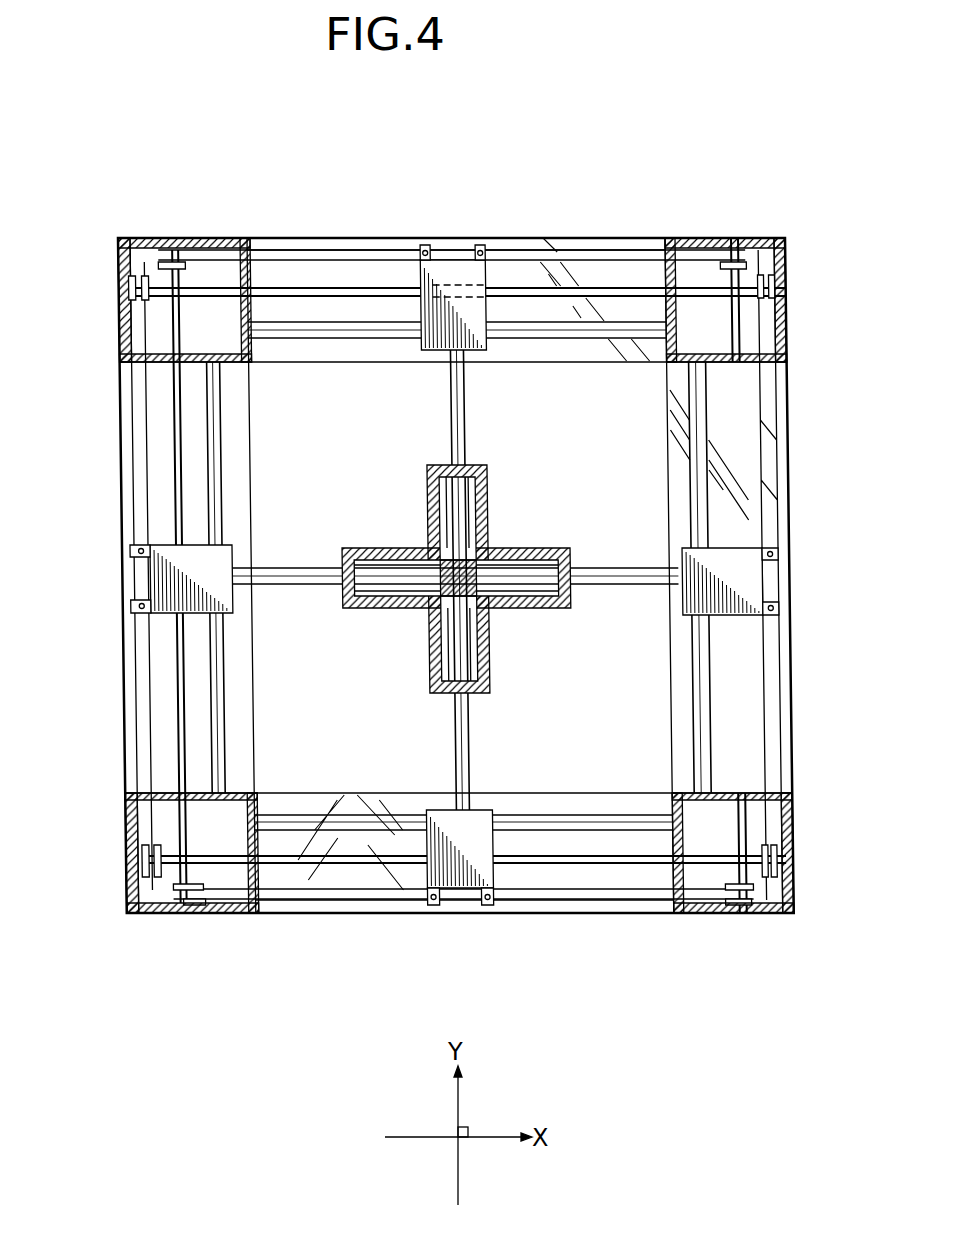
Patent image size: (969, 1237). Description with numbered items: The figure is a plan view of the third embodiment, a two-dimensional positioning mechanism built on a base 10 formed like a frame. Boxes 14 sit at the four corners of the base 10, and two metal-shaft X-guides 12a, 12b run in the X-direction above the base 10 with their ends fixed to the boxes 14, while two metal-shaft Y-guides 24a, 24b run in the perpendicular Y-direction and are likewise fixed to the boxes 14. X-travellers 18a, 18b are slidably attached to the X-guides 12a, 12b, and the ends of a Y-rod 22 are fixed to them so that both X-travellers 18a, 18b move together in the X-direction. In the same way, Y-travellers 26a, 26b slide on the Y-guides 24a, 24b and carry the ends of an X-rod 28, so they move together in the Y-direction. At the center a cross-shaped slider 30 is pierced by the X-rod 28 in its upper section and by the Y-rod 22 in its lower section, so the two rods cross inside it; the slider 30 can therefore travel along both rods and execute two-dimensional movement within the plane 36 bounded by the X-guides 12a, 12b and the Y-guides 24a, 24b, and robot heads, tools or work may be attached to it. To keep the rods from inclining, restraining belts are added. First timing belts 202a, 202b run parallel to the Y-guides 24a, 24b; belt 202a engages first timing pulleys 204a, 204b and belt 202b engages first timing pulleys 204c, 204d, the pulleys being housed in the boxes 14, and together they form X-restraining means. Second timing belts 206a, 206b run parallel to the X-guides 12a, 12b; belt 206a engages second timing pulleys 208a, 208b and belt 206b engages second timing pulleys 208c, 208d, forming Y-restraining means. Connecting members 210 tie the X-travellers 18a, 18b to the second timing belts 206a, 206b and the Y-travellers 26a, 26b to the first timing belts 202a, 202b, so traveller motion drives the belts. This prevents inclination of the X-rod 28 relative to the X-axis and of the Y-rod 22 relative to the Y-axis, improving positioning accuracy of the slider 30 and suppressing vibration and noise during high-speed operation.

The base 10 is at (622, 913).
The boxes 14 is at (155, 238).
The X-guide 12a is at (578, 830).
The X-guide 12b is at (317, 328).
The X-traveller 18a is at (437, 852).
The X-traveller 18b is at (432, 333).
The Y-rod 22 is at (462, 415).
The Y-guide 24a is at (705, 712).
The Y-guide 24b is at (215, 738).
The Y-traveller 26a is at (720, 557).
The Y-traveller 26b is at (190, 580).
The X-rod 28 is at (610, 587).
The slider 30 is at (492, 492).
The plane 36 is at (342, 768).
The first timing belt 202a is at (768, 440).
The first timing belt 202b is at (140, 423).
The first timing pulley 204a is at (792, 828).
The first timing pulley 204b is at (785, 313).
The first timing pulley 204c is at (145, 880).
The first timing pulley 204d is at (142, 238).
The second timing belt 206a is at (662, 913).
The second timing belt 206b is at (582, 257).
The second timing pulley 208a is at (768, 915).
The second timing pulley 208b is at (195, 913).
The second timing pulley 208c is at (750, 242).
The second timing pulley 208d is at (213, 238).
The connecting members 210 is at (425, 245).